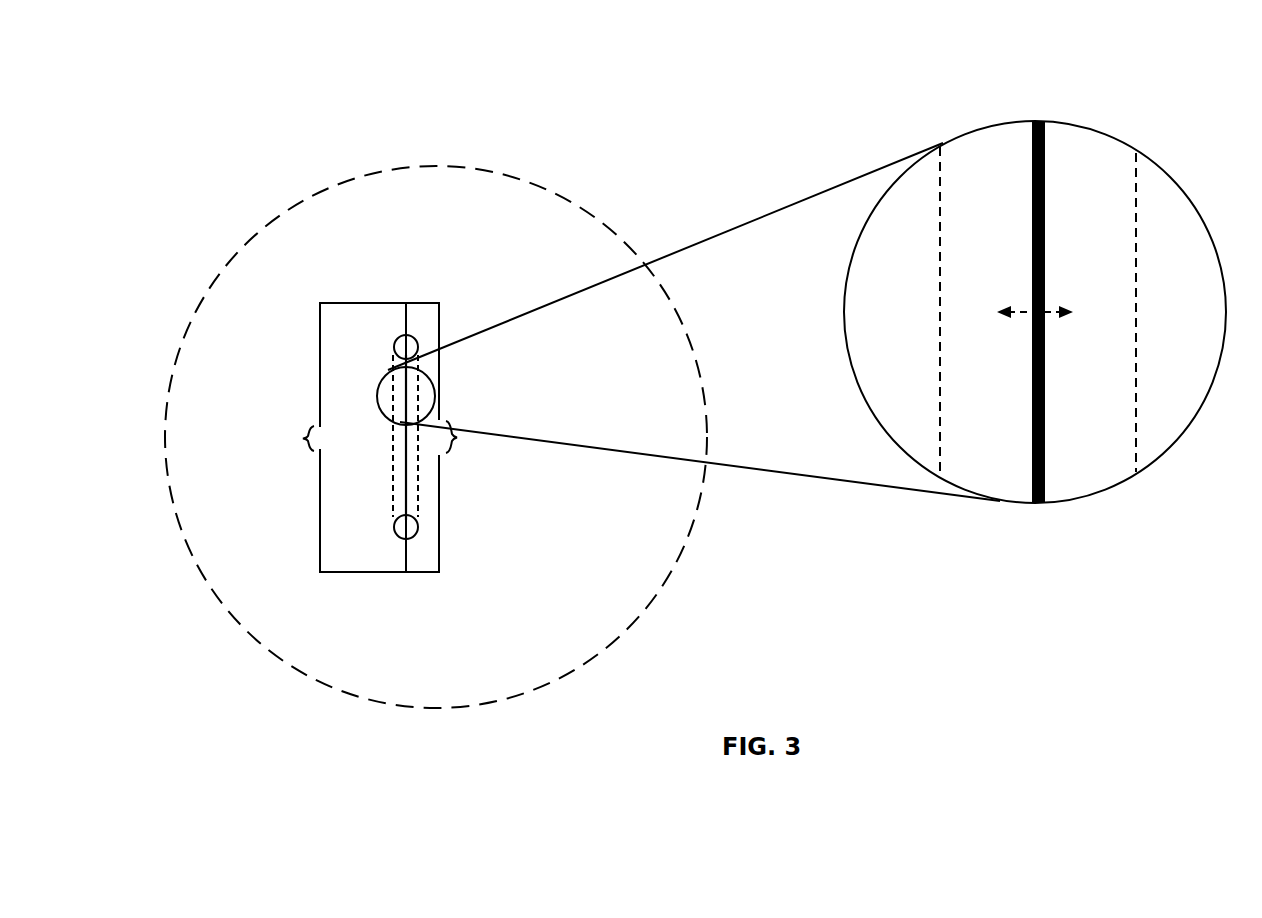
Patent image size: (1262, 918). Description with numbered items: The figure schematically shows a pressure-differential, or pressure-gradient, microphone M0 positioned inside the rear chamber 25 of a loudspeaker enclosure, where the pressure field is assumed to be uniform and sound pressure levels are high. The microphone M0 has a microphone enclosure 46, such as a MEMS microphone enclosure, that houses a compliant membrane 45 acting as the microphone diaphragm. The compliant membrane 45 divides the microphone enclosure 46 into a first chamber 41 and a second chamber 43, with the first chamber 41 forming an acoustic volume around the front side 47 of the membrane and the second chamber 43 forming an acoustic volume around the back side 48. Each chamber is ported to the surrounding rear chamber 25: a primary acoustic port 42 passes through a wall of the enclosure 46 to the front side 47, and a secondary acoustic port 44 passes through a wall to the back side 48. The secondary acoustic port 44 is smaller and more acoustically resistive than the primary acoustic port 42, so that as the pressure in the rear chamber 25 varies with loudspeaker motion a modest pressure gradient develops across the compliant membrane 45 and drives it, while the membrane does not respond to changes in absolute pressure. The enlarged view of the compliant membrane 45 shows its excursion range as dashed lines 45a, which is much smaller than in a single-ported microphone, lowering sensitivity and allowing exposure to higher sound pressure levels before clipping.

The microphone M0 is at (375, 290).
The rear chamber 25 is at (531, 234).
The first chamber 41 is at (333, 518).
The primary acoustic port 42 is at (302, 438).
The second chamber 43 is at (430, 518).
The secondary acoustic port 44 is at (458, 438).
The compliant membrane 45 is at (406, 490).
The dashed lines 45a is at (940, 231).
The microphone enclosure 46 is at (385, 573).
The front side 47 is at (406, 318).
The back side 48 is at (406, 318).